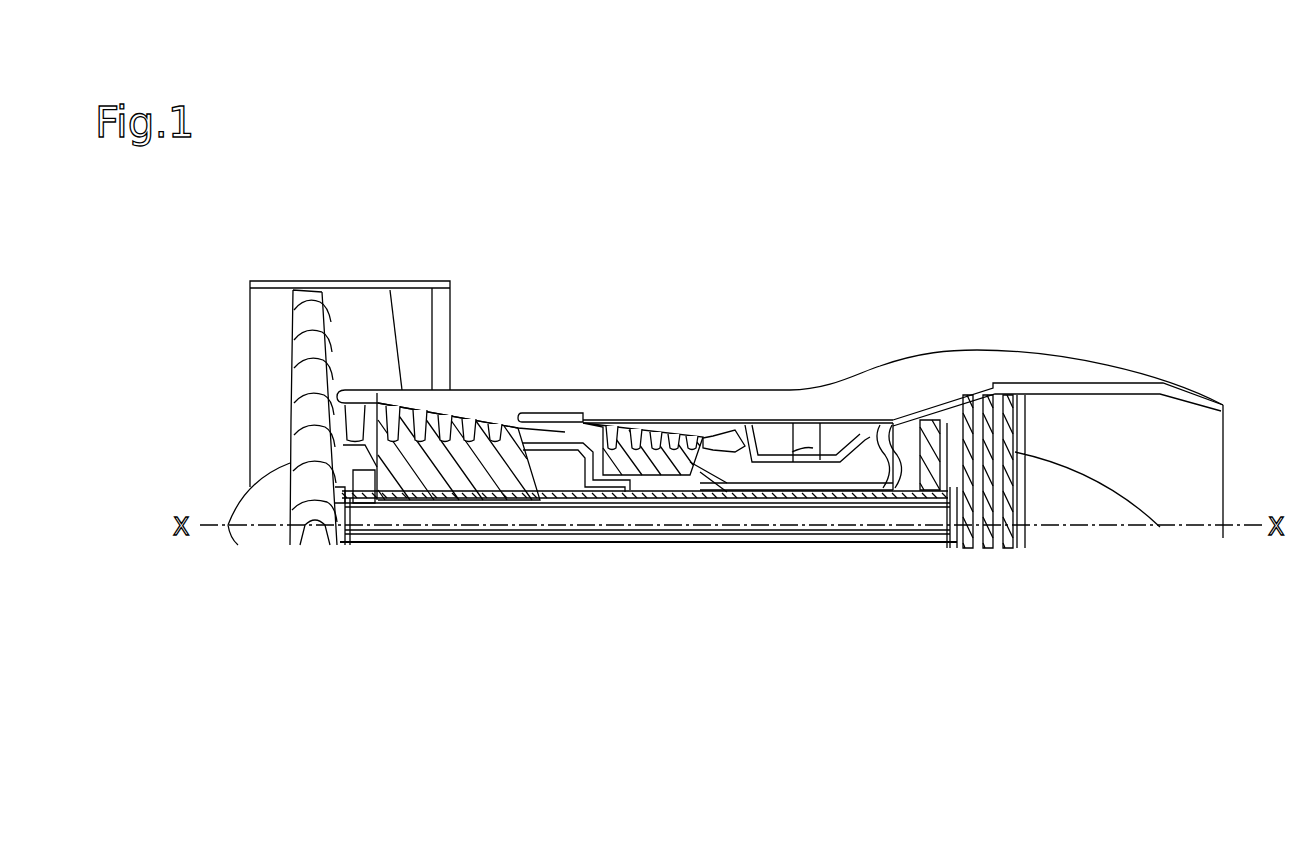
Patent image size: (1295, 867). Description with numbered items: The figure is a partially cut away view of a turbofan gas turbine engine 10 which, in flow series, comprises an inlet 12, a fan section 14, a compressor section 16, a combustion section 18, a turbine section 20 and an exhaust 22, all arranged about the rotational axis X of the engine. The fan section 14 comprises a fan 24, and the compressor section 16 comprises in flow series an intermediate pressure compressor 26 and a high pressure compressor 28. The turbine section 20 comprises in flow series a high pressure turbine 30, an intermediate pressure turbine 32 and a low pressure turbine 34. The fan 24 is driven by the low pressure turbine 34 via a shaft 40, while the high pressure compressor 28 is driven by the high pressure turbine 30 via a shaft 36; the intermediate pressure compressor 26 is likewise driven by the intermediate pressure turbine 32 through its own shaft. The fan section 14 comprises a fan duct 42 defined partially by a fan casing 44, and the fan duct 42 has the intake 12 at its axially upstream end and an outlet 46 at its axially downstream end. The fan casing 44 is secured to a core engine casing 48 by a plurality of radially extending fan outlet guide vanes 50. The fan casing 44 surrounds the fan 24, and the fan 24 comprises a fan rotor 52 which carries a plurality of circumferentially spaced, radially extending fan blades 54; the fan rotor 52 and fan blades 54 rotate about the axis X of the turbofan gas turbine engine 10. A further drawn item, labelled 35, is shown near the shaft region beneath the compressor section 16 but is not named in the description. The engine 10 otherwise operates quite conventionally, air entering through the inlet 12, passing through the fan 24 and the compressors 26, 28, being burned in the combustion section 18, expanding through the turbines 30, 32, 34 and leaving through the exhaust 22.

The turbofan gas turbine engine 10 is at (648, 306).
The inlet 12 is at (215, 392).
The fan section 14 is at (356, 287).
The compressor section 16 is at (553, 308).
The combustion section 18 is at (806, 417).
The turbine section 20 is at (970, 307).
The exhaust 22 is at (1200, 483).
The fan 24 is at (300, 296).
The intermediate pressure compressor 26 is at (462, 455).
The high pressure compressor 28 is at (643, 433).
The high pressure turbine 30 is at (885, 423).
The intermediate pressure turbine 32 is at (923, 427).
The low pressure turbine 34 is at (987, 397).
The bearing housing 35 is at (573, 497).
The shaft 36 is at (852, 487).
The shaft 40 is at (663, 517).
The fan duct 42 is at (808, 460).
The fan casing 44 is at (324, 290).
The outlet 46 is at (455, 307).
The core engine casing 48 is at (717, 388).
The fan outlet guide vanes 50 is at (408, 302).
The fan rotor 52 is at (255, 512).
The fan blades 54 is at (306, 450).